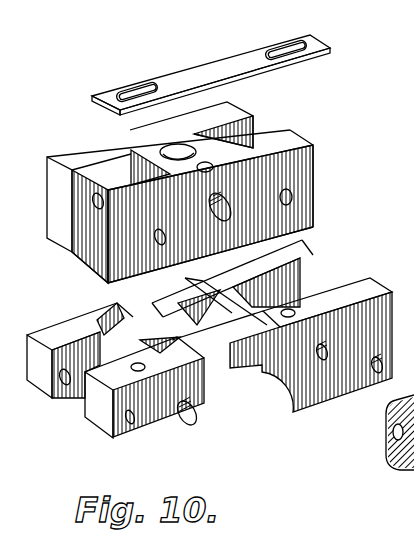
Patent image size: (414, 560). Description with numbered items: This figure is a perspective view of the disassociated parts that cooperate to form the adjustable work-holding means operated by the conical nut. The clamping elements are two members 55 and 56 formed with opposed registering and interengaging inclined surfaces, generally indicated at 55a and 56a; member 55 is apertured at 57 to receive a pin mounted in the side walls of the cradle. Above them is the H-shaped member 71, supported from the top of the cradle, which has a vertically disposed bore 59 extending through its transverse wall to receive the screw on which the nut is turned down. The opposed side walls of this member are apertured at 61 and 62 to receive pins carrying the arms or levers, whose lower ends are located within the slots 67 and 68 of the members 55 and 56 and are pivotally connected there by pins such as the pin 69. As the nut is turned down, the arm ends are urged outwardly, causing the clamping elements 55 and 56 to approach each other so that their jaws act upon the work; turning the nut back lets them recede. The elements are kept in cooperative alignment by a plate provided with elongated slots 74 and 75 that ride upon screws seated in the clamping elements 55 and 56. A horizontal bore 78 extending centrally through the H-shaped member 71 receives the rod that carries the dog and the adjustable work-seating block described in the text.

The clamping element 55 is at (147, 378).
The inclined surface 55a is at (238, 432).
The clamping element 56 is at (272, 322).
The inclined surface 56a is at (312, 255).
The aperture 57 is at (192, 426).
The vertically disposed bore 59 is at (186, 192).
The aperture 61 is at (93, 199).
The aperture 62 is at (292, 193).
The slot 67 is at (72, 397).
The slot 68 is at (306, 278).
The pin 69 is at (413, 387).
The H-shaped member 71 is at (191, 77).
The elongated slot 74 is at (137, 88).
The elongated slot 75 is at (272, 48).
The horizontal bore 78 is at (233, 205).